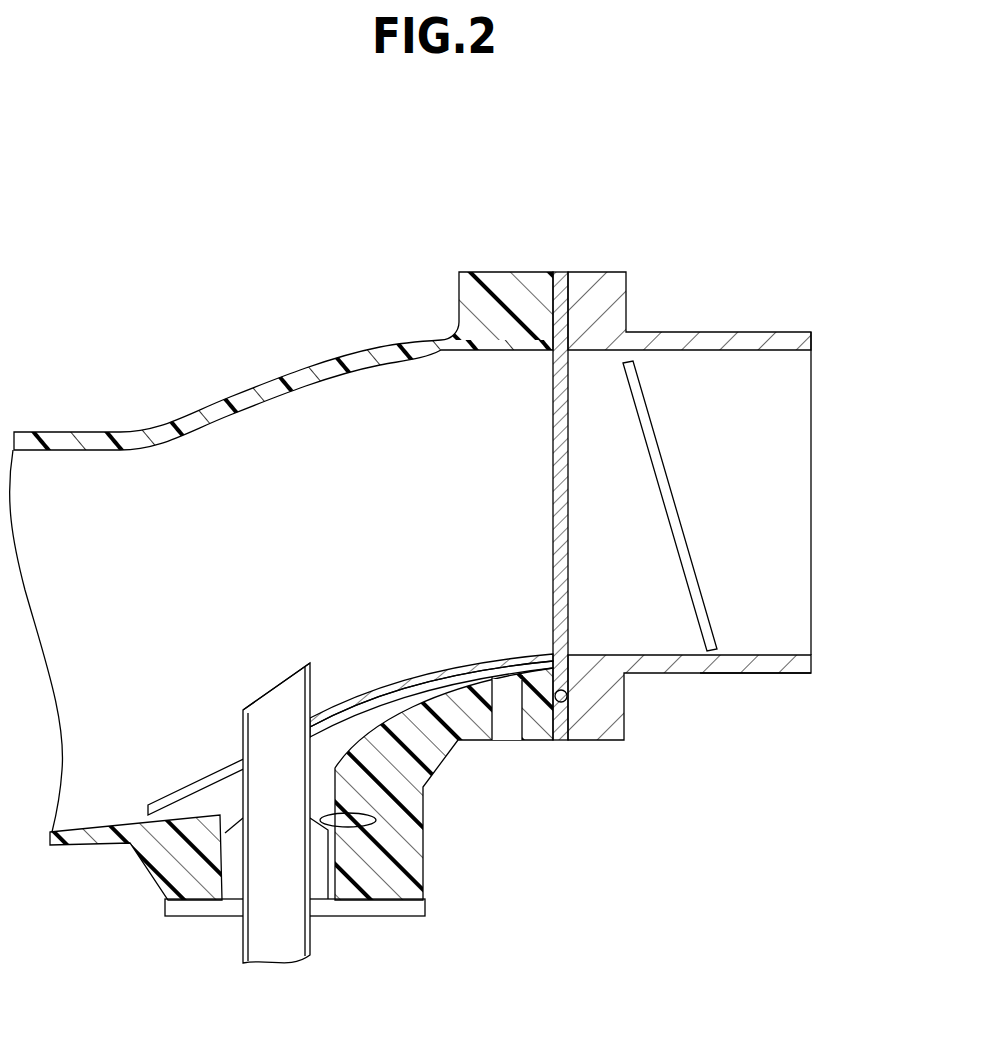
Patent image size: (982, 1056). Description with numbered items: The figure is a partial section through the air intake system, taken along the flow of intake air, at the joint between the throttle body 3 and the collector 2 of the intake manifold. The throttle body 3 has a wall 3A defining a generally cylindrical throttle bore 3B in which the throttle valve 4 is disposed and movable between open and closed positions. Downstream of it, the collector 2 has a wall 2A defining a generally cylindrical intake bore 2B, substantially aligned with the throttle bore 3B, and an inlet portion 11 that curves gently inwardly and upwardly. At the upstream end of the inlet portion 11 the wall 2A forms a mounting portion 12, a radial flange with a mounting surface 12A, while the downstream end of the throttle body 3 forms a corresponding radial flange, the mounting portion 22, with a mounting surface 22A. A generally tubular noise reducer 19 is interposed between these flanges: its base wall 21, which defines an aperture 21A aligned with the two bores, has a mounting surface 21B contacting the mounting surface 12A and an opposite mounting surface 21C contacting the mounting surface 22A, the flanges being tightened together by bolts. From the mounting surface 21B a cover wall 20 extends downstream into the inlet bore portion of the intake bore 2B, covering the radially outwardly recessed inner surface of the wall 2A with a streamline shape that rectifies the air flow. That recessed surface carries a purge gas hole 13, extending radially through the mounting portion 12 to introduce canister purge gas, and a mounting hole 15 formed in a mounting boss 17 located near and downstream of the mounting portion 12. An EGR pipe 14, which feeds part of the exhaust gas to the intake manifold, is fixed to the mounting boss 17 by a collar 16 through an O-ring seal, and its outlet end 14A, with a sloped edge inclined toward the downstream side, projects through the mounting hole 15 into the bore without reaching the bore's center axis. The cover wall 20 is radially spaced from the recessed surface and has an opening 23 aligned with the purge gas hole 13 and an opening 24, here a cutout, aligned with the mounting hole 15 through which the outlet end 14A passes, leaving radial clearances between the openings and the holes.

The collector 2 is at (150, 420).
The wall 2A is at (228, 416).
The intake bore 2B is at (298, 432).
The inlet portion 11 is at (368, 360).
The mounting portion 12 is at (470, 290).
The mounting surface 12A is at (562, 295).
The base wall 21 is at (600, 745).
The aperture 21A is at (558, 657).
The mounting surface 21B is at (553, 300).
The mounting surface 21C is at (568, 320).
The throttle body 3 is at (716, 336).
The wall 3A is at (790, 336).
The throttle bore 3B is at (765, 610).
The mounting portion 22 is at (588, 300).
The mounting surface 22A is at (566, 695).
The throttle valve 4 is at (655, 444).
The purge gas hole 13 is at (508, 727).
The opening 23 is at (510, 660).
The mounting hole 15 is at (376, 823).
The collar 16 is at (207, 905).
The mounting boss 17 is at (160, 880).
The EGR pipe 14 is at (290, 937).
The outlet end 14A is at (268, 708).
The opening 24 is at (192, 797).
The noise reducer 19 is at (432, 652).
The cover wall 20 is at (372, 698).